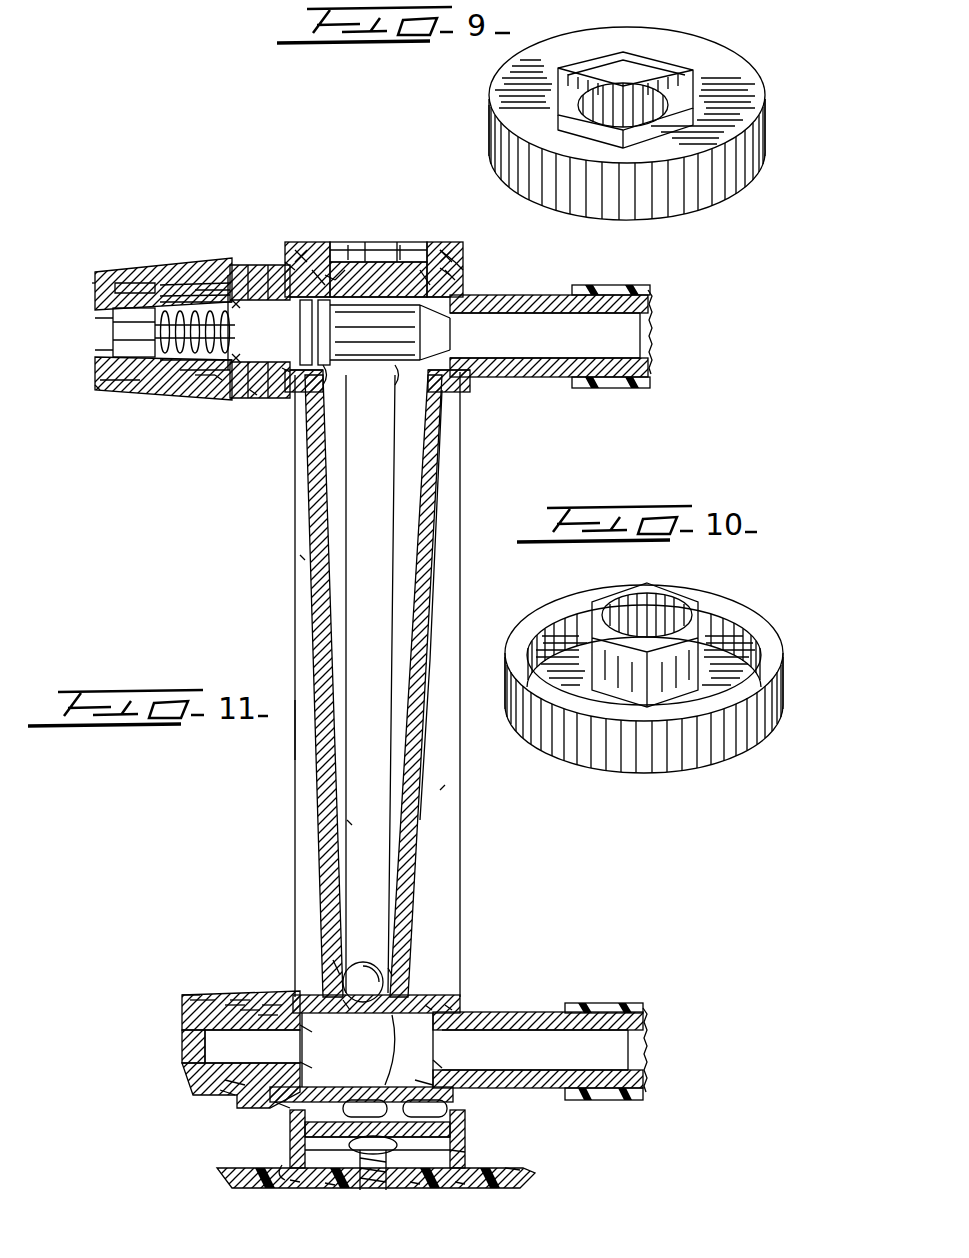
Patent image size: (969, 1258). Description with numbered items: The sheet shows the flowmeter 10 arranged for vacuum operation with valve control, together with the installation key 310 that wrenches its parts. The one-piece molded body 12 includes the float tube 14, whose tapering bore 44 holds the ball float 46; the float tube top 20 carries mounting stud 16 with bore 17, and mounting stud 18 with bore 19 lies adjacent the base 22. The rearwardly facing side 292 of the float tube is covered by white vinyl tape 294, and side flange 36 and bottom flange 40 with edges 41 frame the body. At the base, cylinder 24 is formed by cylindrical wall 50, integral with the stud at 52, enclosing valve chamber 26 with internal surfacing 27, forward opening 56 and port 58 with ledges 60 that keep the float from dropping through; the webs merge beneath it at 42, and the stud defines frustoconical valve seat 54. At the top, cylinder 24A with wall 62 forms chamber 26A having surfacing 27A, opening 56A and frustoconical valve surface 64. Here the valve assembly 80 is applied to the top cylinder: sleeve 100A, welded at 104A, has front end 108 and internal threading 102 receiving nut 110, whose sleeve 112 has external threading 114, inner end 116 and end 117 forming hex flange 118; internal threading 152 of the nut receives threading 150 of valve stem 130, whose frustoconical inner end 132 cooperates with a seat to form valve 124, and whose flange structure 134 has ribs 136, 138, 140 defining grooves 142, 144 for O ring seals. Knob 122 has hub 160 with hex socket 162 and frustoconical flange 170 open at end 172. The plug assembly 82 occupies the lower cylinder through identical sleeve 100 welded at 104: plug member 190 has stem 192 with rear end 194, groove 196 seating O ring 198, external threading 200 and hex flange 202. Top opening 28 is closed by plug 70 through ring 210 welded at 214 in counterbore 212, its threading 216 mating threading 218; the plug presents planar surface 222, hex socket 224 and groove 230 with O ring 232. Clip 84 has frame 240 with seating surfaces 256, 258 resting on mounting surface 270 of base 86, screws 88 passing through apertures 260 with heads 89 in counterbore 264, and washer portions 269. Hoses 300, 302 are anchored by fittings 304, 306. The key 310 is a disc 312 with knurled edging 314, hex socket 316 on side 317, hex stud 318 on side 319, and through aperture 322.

In FIG. 11, the flowmeter 10 is at (462, 752).
In FIG. 11, the body 12 is at (465, 480).
In FIG. 11, the float tube 14 is at (445, 590).
In FIG. 11, the tubular mounting stud 16 is at (510, 297).
In FIG. 11, the bore of mounting stud 17 is at (527, 327).
In FIG. 11, the tubular mounting stud 18 is at (533, 1012).
In FIG. 11, the bore of mounting stud 19 is at (610, 1043).
In FIG. 11, the float tube top 20 is at (435, 397).
In FIG. 11, the float tube base 22 is at (390, 1005).
In FIG. 11, the cylinder 24 is at (345, 1005).
In FIG. 11, the valve chamber 26 is at (417, 1080).
In FIG. 11, the internal surfacing of cylinder 27 is at (333, 960).
In FIG. 11, the top opening 28 is at (350, 280).
In FIG. 11, the side flange 36 is at (302, 555).
In FIG. 11, the bottom flange 40 is at (465, 1152).
In FIG. 11, the bottom flange side edges 41 is at (463, 1133).
In FIG. 11, the web merging region 42 is at (380, 1077).
In FIG. 11, the bore 44 is at (420, 450).
In FIG. 11, the ball type float 46 is at (390, 968).
In FIG. 11, the cylindrical wall 50 is at (282, 1108).
In FIG. 11, the stud junction 52 is at (447, 1005).
In FIG. 11, the frustoconical valve seat 54 is at (442, 1068).
In FIG. 11, the forwardly facing opening 56 is at (227, 1093).
In FIG. 11, the port 58 is at (356, 968).
In FIG. 11, the dimples or ledges 60 is at (428, 1005).
In FIG. 11, the cylindrical wall 62 is at (282, 280).
In FIG. 11, the frustoconical valve surface 64 is at (470, 370).
In FIG. 11, the cap or plug 70 is at (403, 257).
In FIG. 11, the valve assembly 80 is at (95, 385).
In FIG. 11, the plug assembly 82 is at (178, 1040).
In FIG. 11, the supporting clip device 84 is at (475, 1128).
In FIG. 11, the mounting base 86 is at (520, 1185).
In FIG. 11, the body screws 88 is at (347, 1187).
In FIG. 11, the screw heads 89 is at (403, 1150).
In FIG. 11, the mounting sleeve 100 is at (248, 995).
In FIG. 11, the mounting sleeve 100A is at (198, 293).
In FIG. 11, the internal threading 102 is at (235, 997).
In FIG. 11, the ultrasonic weld 104 is at (270, 997).
In FIG. 11, the ultrasonic weld 104A is at (290, 370).
In FIG. 11, the sleeve front end 108 is at (240, 997).
In FIG. 11, the nut 110 is at (150, 375).
In FIG. 11, the nut sleeve 112 is at (187, 380).
In FIG. 11, the external threading 114 is at (205, 380).
In FIG. 11, the inner cylindrical end 116 is at (317, 328).
In FIG. 11, the nut end 117 is at (140, 280).
In FIG. 11, the hex shaped flange 118 is at (147, 393).
In FIG. 11, the knob 122 is at (90, 283).
In FIG. 11, the valve 124 is at (458, 345).
In FIG. 11, the valve stem 130 is at (450, 275).
In FIG. 11, the valve stem inner end 132 is at (445, 318).
In FIG. 11, the flange structure 134 is at (281, 288).
In FIG. 11, the rib 136 is at (364, 280).
In FIG. 11, the rib 138 is at (310, 343).
In FIG. 11, the rib 140 is at (330, 336).
In FIG. 11, the groove 142 is at (297, 325).
In FIG. 11, the groove 144 is at (318, 327).
In FIG. 11, the external threading 150 is at (200, 345).
In FIG. 11, the internal threading 152 is at (228, 277).
In FIG. 11, the hub portion 160 is at (113, 312).
In FIG. 11, the hex shaped socket 162 is at (190, 340).
In FIG. 11, the encompassing flange 170 is at (180, 290).
In FIG. 11, the flange open end 172 is at (213, 287).
In FIG. 11, the plug member 190 is at (180, 995).
In FIG. 11, the stem 192 is at (250, 1033).
In FIG. 11, the stem inner end 194 is at (303, 1030).
In FIG. 11, the annular groove 196 is at (305, 1065).
In FIG. 11, the O ring seal 198 is at (265, 997).
In FIG. 11, the external threading 200 is at (235, 1082).
In FIG. 11, the hex shaped end flange 202 is at (195, 997).
In FIG. 11, the ring 210 is at (447, 262).
In FIG. 11, the counterbore 212 is at (462, 262).
In FIG. 11, the ultrasonic weld 214 is at (458, 262).
In FIG. 11, the ring threading 216 is at (318, 285).
In FIG. 11, the plug threading 218 is at (423, 283).
In FIG. 11, the annular planar surface 222 is at (395, 370).
In FIG. 11, the hex shaped socket 224 is at (375, 250).
In FIG. 11, the annular groove 230 is at (453, 273).
In FIG. 11, the O ring seal 232 is at (330, 277).
In FIG. 11, the frame structure 240 is at (473, 1115).
In FIG. 11, the seating surface 256 is at (280, 1172).
In FIG. 11, the seating surface 258 is at (460, 1183).
In FIG. 11, the screw receiving apertures 260 is at (330, 1185).
In FIG. 11, the counterbore 264 is at (297, 1180).
In FIG. 11, the washer like portions 269 is at (413, 1183).
In FIG. 11, the mounting surface 270 is at (517, 1170).
In FIG. 11, the rearwardly facing side 292 is at (438, 575).
In FIG. 11, the white vinyl tape 294 is at (430, 825).
In FIG. 11, the flexible hose 300 is at (620, 388).
In FIG. 11, the flexible hose 302 is at (630, 1092).
In FIG. 11, the fitting 304 is at (585, 388).
In FIG. 11, the fitting 306 is at (600, 1103).
In FIG. 9, the installation key 310 is at (758, 50).
In FIG. 10, the installation key 310 is at (757, 600).
In FIG. 9, the disc 312 is at (718, 52).
In FIG. 9, the knurled edging 314 is at (705, 170).
In FIG. 9, the hex socket 316 is at (560, 68).
In FIG. 9, the disc side 317 is at (505, 108).
In FIG. 10, the hex stud 318 is at (700, 605).
In FIG. 10, the disc side 319 is at (745, 690).
In FIG. 9, the through cylindrical aperture 322 is at (640, 115).
In FIG. 10, the through cylindrical aperture 322 is at (640, 600).
In FIG. 11, the additional cylinder 24A is at (222, 380).
In FIG. 11, the cylindrical chamber 26A is at (287, 372).
In FIG. 11, the internal surfacing of cylinder 27A is at (328, 372).
In FIG. 11, the forwardly facing opening 56A is at (255, 395).